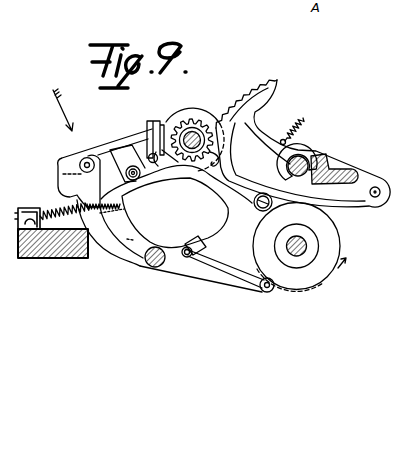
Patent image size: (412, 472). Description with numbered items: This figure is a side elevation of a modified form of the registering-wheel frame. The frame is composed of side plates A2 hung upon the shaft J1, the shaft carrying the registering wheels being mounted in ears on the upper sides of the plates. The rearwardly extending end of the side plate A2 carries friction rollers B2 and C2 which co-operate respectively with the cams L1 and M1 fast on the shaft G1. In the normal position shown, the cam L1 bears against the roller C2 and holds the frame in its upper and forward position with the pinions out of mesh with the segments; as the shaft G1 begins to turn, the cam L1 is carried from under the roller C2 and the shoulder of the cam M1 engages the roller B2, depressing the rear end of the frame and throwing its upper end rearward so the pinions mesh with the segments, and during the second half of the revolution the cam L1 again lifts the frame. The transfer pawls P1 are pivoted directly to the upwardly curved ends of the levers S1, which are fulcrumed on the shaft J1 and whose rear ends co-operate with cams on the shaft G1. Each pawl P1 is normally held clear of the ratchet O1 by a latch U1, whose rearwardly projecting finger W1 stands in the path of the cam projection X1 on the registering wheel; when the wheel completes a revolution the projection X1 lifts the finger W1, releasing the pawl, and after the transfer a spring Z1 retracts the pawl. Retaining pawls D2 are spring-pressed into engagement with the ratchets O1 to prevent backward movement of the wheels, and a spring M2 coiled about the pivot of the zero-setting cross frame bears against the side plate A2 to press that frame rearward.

The transfer pawl P1 is at (101, 143).
The latch U1 is at (147, 128).
The cam projection X1 is at (165, 127).
The ratchet O1 is at (185, 127).
The spring Z1 is at (222, 99).
The finger W1 is at (261, 88).
The cam M1 is at (324, 207).
The spring M2 is at (124, 180).
The retaining pawl D2 is at (150, 186).
The side plate A2 is at (137, 208).
The lever S1 is at (115, 245).
The shaft J1 is at (153, 270).
The friction roller C2 is at (252, 209).
The cam L1 is at (316, 279).
The shaft G1 is at (308, 243).
The friction roller B2 is at (266, 292).